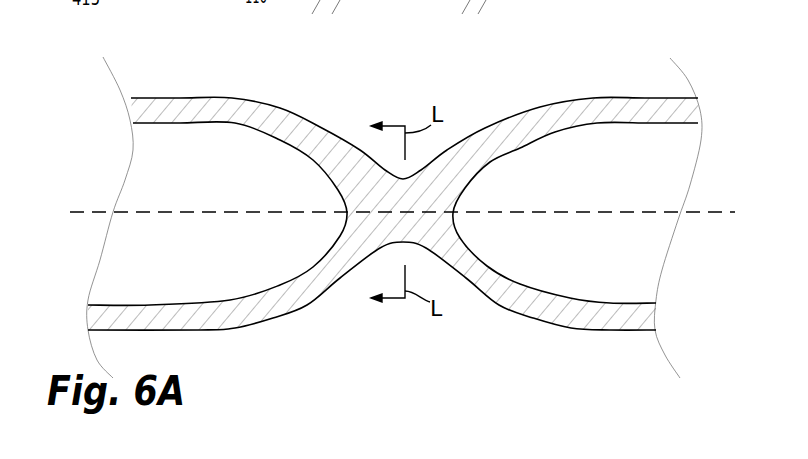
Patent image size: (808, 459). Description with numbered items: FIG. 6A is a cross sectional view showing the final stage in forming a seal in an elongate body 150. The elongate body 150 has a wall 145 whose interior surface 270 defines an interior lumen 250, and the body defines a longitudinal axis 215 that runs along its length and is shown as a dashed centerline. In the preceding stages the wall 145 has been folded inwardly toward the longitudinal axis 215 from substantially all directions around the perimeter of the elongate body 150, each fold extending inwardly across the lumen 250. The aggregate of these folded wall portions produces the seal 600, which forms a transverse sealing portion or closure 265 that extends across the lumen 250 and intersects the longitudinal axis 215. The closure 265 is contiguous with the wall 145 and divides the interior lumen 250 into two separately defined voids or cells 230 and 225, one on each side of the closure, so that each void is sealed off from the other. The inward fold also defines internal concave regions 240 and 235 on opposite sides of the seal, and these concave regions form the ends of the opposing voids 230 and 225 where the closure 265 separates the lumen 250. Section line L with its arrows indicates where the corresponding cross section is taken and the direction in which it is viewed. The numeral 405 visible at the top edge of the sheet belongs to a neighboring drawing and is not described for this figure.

The wall 145 is at (180, 105).
The elongate body 150 is at (577, 105).
The longitudinal axis 215 is at (570, 212).
The void 225 is at (640, 231).
The void 230 is at (157, 175).
The internal concave region 235 is at (487, 238).
The internal concave region 240 is at (327, 203).
The interior lumen 250 is at (637, 262).
The sealing portion 265 is at (356, 217).
The interior surface 270 is at (482, 147).
The seal 600 is at (387, 324).
The wall portion of adjacent figure 405 is at (406, 0).